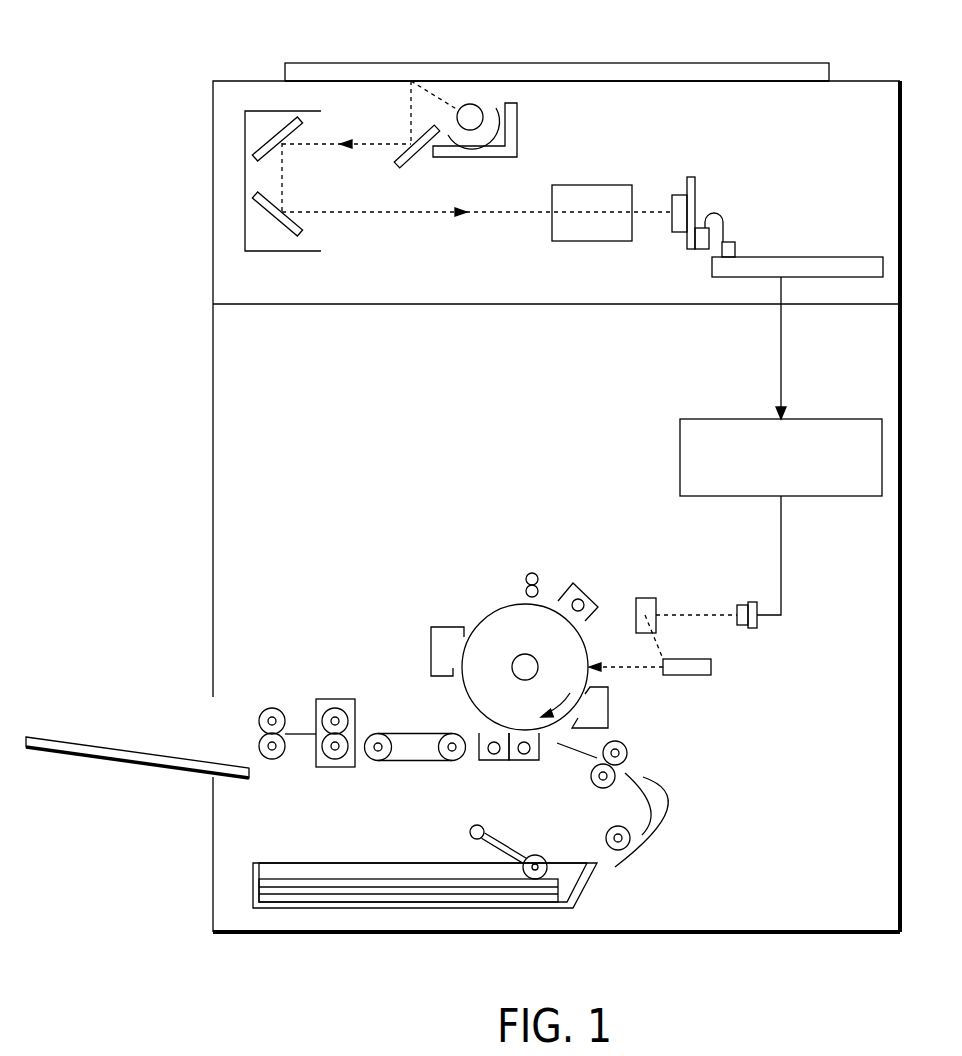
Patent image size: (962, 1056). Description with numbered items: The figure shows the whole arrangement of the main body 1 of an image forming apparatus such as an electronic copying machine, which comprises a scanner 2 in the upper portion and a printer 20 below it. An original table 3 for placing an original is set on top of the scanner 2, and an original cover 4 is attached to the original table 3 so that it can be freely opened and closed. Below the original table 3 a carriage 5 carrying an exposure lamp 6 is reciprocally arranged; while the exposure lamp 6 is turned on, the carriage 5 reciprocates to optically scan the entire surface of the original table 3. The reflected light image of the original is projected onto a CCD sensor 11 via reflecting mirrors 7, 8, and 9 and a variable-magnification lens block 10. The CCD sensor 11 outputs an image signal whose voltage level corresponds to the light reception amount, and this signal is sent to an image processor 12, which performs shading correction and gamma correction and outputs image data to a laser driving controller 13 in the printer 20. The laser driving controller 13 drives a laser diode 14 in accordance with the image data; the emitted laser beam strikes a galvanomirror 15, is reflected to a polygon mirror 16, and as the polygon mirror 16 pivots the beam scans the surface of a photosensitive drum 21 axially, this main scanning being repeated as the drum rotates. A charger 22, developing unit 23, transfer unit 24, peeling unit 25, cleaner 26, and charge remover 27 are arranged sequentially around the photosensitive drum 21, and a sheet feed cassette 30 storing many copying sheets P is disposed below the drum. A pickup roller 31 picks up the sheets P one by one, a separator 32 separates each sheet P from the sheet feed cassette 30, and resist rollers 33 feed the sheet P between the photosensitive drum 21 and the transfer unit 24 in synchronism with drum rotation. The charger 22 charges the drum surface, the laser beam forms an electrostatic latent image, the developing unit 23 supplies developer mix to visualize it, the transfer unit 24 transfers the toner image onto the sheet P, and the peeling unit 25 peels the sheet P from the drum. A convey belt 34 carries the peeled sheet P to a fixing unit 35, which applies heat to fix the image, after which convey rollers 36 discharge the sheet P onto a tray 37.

The main body 1 is at (885, 80).
The scanner 2 is at (857, 85).
The original table 3 is at (713, 83).
The original cover 4 is at (683, 62).
The carriage 5 is at (520, 118).
The exposure lamp 6 is at (470, 104).
The reflecting mirror 7 is at (417, 160).
The reflecting mirror 8 is at (300, 125).
The reflecting mirror 9 is at (300, 232).
The variable-magnification lens block 10 is at (610, 185).
The CCD sensor 11 is at (697, 190).
The image processor 12 is at (818, 257).
The laser driving controller 13 is at (847, 419).
The laser diode 14 is at (753, 630).
The galvanomirror 15 is at (645, 598).
The polygon mirror 16 is at (695, 677).
The printer 20 is at (837, 934).
The photosensitive drum 21 is at (484, 607).
The charger 22 is at (585, 592).
The developing unit 23 is at (610, 701).
The transfer unit 24 is at (530, 762).
The peeling unit 25 is at (490, 762).
The cleaner 26 is at (431, 646).
The charge remover 27 is at (532, 572).
The sheet feed cassette 30 is at (580, 890).
The pickup roller 31 is at (545, 856).
The separator 32 is at (606, 831).
The resist rollers 33 is at (628, 753).
The convey belt 34 is at (417, 762).
The fixing unit 35 is at (335, 699).
The convey rollers 36 is at (272, 708).
The tray 37 is at (73, 738).
The copying sheet P is at (358, 879).